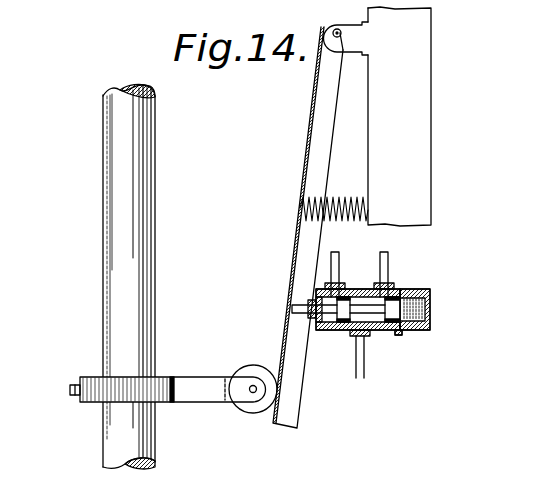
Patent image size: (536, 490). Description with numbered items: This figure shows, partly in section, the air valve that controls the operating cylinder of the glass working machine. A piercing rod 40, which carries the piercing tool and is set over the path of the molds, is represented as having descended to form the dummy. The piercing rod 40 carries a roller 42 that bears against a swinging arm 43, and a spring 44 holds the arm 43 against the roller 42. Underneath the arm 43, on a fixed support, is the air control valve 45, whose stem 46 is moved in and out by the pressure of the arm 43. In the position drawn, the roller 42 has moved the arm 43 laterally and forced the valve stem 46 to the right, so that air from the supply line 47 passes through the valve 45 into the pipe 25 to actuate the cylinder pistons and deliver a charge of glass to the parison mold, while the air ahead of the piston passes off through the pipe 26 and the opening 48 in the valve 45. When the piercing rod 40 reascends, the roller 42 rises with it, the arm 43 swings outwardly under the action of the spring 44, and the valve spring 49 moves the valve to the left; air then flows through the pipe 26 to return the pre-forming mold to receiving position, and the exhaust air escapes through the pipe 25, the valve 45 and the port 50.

The pipe 25 is at (388, 263).
The pipe 26 is at (337, 263).
The piercing rod 40 is at (112, 259).
The roller 42 is at (253, 407).
The swinging arm 43 is at (290, 422).
The spring 44 is at (338, 196).
The air control valve 45 is at (393, 302).
The valve stem 46 is at (298, 309).
The air supply line 47 is at (361, 376).
The opening 48 is at (325, 333).
The valve spring 49 is at (431, 307).
The port 50 is at (399, 335).